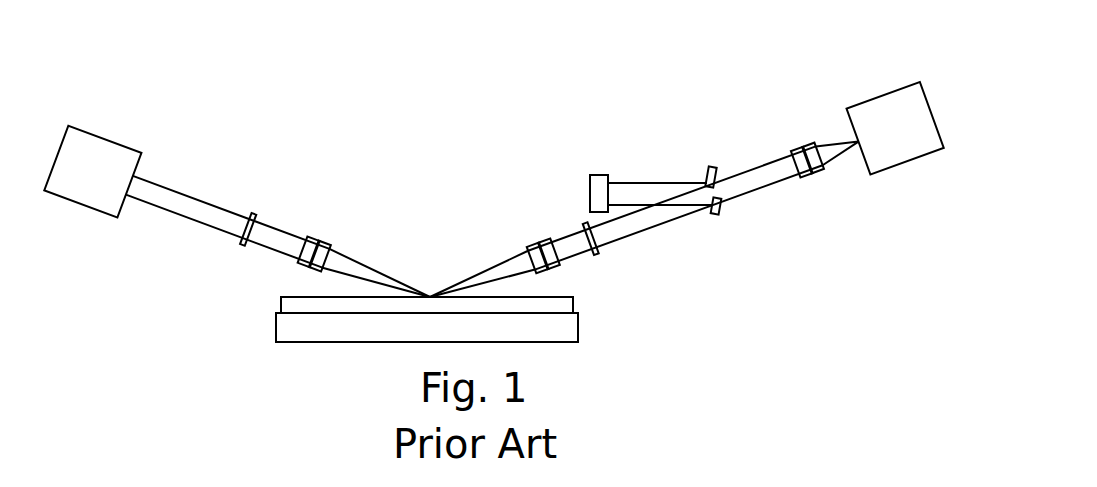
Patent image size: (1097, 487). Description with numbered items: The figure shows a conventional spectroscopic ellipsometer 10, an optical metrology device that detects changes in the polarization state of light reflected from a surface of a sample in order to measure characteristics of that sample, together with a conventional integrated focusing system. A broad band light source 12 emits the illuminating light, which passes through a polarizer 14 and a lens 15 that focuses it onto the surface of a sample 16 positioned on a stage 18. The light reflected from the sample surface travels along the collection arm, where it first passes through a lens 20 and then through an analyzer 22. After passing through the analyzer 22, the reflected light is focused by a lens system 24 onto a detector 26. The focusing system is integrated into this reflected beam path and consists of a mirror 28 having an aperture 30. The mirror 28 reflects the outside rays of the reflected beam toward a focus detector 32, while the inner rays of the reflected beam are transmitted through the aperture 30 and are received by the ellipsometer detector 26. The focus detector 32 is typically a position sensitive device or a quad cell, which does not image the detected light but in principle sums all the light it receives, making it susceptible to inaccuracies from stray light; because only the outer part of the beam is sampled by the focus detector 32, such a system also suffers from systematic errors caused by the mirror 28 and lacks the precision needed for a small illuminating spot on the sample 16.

The spectroscopic ellipsometer 10 is at (233, 55).
The broad band light source 12 is at (107, 138).
The polarizer 14 is at (248, 212).
The lens 15 is at (326, 242).
The sample 16 is at (281, 305).
The stage 18 is at (276, 332).
The lens 20 is at (557, 265).
The analyzer 22 is at (600, 256).
The lens system 24 is at (795, 152).
The detector 26 is at (877, 100).
The mirror 28 is at (720, 213).
The aperture 30 is at (732, 203).
The focus detector 32 is at (590, 182).